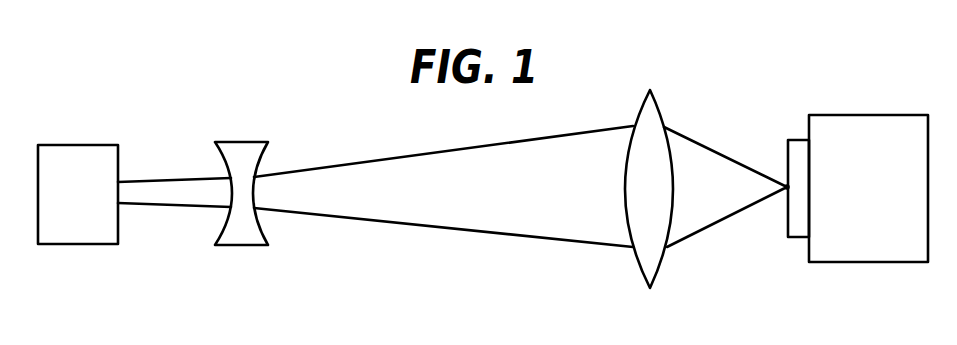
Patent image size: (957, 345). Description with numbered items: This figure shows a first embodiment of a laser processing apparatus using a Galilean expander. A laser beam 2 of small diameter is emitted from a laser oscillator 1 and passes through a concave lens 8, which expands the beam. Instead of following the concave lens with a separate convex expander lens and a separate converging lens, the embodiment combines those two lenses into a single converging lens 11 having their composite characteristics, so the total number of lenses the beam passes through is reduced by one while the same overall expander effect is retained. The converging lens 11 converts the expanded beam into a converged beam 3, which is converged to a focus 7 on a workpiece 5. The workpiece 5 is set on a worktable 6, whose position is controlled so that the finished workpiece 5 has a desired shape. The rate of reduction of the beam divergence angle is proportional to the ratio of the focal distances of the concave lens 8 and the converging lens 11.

The laser oscillator 1 is at (105, 145).
The laser beam 2 is at (167, 181).
The concave lens 8 is at (253, 142).
The converged beam 3 is at (713, 150).
The converging lens 11 is at (650, 90).
The focus 7 is at (785, 190).
The workpiece 5 is at (792, 140).
The worktable 6 is at (913, 115).